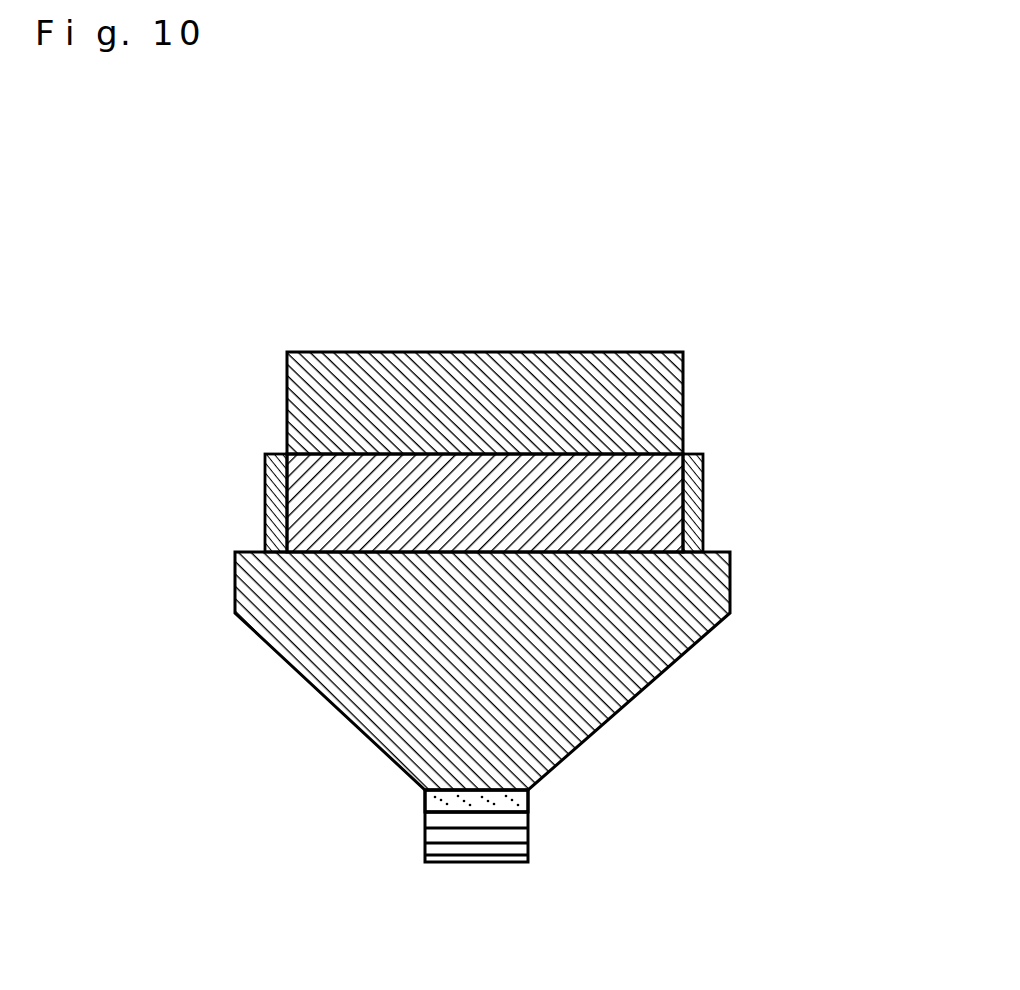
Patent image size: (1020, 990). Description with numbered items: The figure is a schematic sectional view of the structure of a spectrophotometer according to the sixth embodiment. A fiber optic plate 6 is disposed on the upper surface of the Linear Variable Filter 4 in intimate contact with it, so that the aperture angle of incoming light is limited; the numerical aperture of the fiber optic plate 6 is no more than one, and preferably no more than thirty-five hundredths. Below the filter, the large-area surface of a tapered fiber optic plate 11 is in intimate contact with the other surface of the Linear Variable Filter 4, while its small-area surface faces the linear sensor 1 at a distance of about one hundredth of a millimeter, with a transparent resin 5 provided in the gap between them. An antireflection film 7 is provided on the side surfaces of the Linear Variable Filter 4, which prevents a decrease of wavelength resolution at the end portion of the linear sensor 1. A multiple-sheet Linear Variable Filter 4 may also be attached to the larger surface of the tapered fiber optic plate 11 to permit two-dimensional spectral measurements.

The linear sensor 1 is at (528, 846).
The Linear Variable Filter 4 is at (653, 515).
The transparent resin 5 is at (425, 803).
The fiber optic plate 6 is at (613, 385).
The antireflection film 7 is at (270, 452).
The tapered fiber optic plate 11 is at (663, 647).